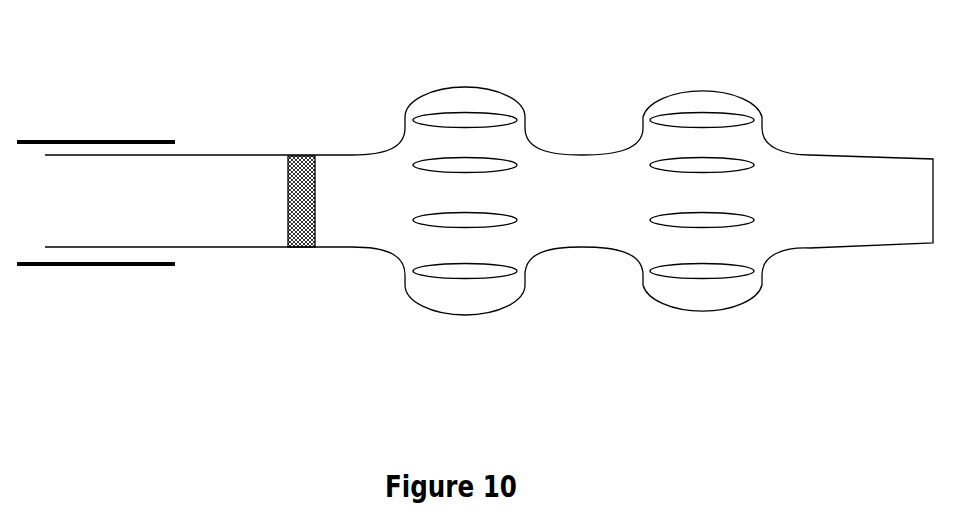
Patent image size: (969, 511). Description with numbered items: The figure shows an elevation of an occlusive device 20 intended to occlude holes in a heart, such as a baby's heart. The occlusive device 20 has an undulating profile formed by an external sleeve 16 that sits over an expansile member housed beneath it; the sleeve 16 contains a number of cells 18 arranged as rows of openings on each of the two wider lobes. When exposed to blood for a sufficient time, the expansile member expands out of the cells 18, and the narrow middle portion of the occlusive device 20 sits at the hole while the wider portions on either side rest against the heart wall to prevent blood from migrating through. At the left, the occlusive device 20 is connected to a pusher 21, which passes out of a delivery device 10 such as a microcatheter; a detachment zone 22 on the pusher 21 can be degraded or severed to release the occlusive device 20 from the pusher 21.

The delivery device 10 is at (45, 285).
The pusher 21 is at (205, 247).
The detachment zone 22 is at (301, 227).
The occlusive device 20 is at (603, 87).
The cells 18 is at (460, 272).
The external sleeve 16 is at (698, 322).